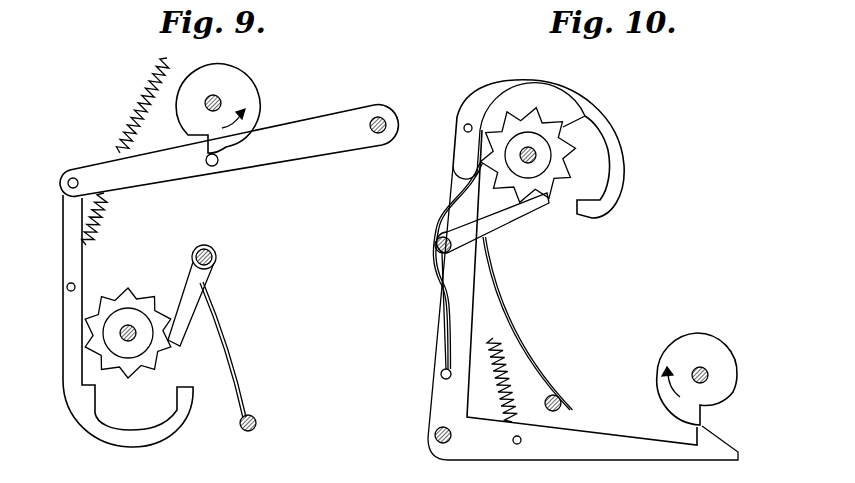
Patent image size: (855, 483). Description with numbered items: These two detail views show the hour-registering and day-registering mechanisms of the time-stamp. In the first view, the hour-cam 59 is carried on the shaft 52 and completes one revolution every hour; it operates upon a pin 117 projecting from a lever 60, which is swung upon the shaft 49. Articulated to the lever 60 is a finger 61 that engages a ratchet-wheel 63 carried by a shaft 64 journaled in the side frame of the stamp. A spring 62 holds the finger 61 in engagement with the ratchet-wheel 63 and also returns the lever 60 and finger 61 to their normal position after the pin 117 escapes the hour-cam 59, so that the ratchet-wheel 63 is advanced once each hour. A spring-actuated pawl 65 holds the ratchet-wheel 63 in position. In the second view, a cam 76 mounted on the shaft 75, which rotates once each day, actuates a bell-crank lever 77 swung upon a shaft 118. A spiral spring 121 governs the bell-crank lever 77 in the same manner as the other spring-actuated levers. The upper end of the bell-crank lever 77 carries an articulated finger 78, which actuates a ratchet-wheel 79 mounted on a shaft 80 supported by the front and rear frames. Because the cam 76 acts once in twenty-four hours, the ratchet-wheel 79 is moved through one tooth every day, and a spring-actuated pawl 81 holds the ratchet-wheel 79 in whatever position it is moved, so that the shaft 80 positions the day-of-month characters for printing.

In FIG. 9, the shaft 49 is at (381, 117).
In FIG. 9, the shaft 52 is at (213, 95).
In FIG. 9, the hour-cam 59 is at (248, 93).
In FIG. 9, the lever 60 is at (229, 151).
In FIG. 9, the finger 61 is at (63, 257).
In FIG. 9, the spring 62 is at (143, 97).
In FIG. 9, the ratchet-wheel 63 is at (125, 296).
In FIG. 9, the shaft 64 is at (128, 341).
In FIG. 9, the spring-actuated pawl 65 is at (208, 284).
In FIG. 9, the pin 117 is at (212, 166).
In FIG. 10, the shaft 75 is at (709, 378).
In FIG. 10, the cam 76 is at (687, 342).
In FIG. 10, the bell-crank lever 77 is at (436, 386).
In FIG. 10, the finger 78 is at (600, 122).
In FIG. 10, the ratchet-wheel 79 is at (564, 163).
In FIG. 10, the shaft 80 is at (527, 148).
In FIG. 10, the spring-actuated pawl 81 is at (508, 221).
In FIG. 10, the shaft 118 is at (434, 437).
In FIG. 10, the spiral spring 121 is at (504, 353).